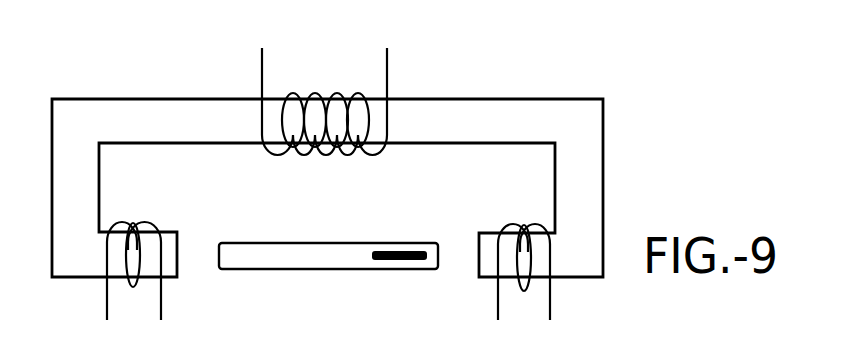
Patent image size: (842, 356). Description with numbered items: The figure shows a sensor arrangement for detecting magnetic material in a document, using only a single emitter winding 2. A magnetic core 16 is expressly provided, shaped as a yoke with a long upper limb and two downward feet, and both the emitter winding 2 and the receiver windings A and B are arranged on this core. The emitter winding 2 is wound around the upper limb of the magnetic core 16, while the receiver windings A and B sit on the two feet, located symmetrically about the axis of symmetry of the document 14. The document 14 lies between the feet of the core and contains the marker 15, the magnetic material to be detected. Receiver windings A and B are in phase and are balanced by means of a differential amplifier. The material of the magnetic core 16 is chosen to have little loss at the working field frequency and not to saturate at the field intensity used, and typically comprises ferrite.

The emitter winding 2 is at (324, 89).
The document 14 is at (290, 257).
The marker 15 is at (395, 258).
The magnetic core 16 is at (580, 183).
The receiver winding A is at (134, 288).
The receiver winding B is at (524, 290).